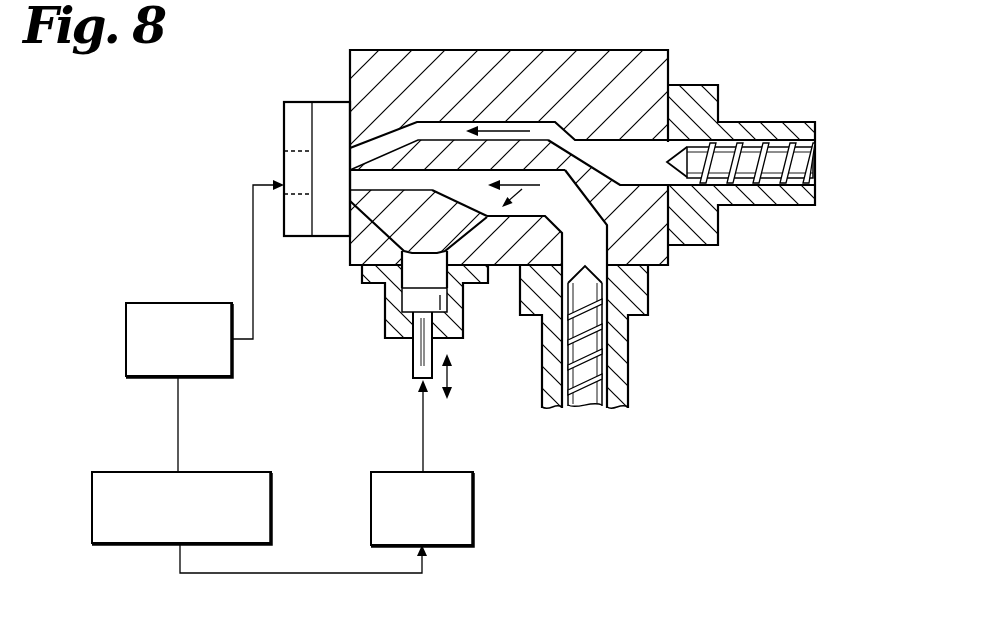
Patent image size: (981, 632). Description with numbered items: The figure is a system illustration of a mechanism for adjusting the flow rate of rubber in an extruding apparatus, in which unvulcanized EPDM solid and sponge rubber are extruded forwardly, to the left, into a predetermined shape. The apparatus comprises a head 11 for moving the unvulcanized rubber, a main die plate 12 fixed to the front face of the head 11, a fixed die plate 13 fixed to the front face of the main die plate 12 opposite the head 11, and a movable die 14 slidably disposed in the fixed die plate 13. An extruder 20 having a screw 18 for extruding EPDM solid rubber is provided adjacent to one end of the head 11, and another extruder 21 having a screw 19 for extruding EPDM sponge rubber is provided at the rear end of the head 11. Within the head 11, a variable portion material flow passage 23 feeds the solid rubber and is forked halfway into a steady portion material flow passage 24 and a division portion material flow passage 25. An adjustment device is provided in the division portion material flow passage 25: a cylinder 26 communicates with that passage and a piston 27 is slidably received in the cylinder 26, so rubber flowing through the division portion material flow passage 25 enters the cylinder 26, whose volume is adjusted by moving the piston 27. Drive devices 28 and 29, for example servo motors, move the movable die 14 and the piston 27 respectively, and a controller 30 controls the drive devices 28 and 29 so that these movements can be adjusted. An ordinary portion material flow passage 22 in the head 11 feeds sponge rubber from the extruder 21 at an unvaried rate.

The head 11 is at (652, 51).
The main die plate 12 is at (325, 100).
The fixed die plate 13 is at (284, 106).
The movable die 14 is at (284, 151).
The screw 18 is at (585, 410).
The screw 19 is at (818, 166).
The extruder 20 is at (630, 378).
The extruder 21 is at (747, 208).
The ordinary portion material flow passage 22 is at (570, 142).
The variable portion material flow passage 23 is at (523, 213).
The steady portion material flow passage 24 is at (430, 172).
The division portion material flow passage 25 is at (395, 250).
The cylinder 26 is at (385, 304).
The piston 27 is at (362, 284).
The drive device 28 is at (236, 357).
The drive device 29 is at (477, 495).
The controller 30 is at (275, 493).